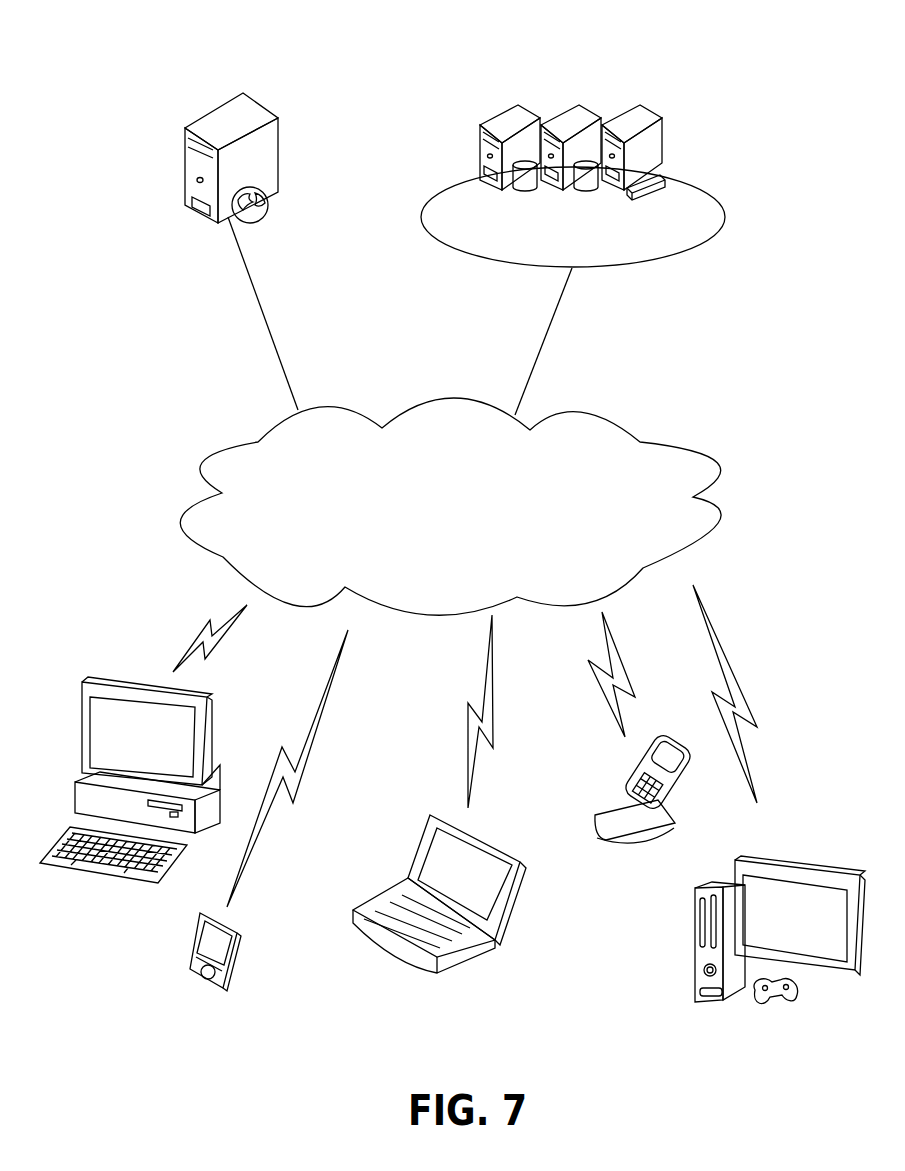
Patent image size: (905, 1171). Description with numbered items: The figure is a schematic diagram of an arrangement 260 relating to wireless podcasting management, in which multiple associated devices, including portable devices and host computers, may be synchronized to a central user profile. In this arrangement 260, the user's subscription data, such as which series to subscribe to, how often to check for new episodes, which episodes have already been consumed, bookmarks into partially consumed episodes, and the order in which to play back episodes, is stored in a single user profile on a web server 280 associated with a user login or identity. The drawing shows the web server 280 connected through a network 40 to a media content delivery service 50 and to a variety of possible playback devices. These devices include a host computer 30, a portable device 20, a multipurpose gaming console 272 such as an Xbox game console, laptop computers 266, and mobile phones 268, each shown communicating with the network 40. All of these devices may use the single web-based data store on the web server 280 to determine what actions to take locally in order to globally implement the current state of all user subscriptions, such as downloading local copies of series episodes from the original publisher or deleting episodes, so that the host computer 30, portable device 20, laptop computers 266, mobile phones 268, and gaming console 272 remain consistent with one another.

The arrangement 260 is at (419, 70).
The web server 280 is at (218, 110).
The media content delivery service 50 is at (697, 175).
The network 40 is at (455, 398).
The host computer 30 is at (145, 683).
The portable device 20 is at (198, 922).
The laptop computers 266 is at (470, 958).
The mobile phones 268 is at (647, 767).
The multipurpose gaming console 272 is at (795, 865).